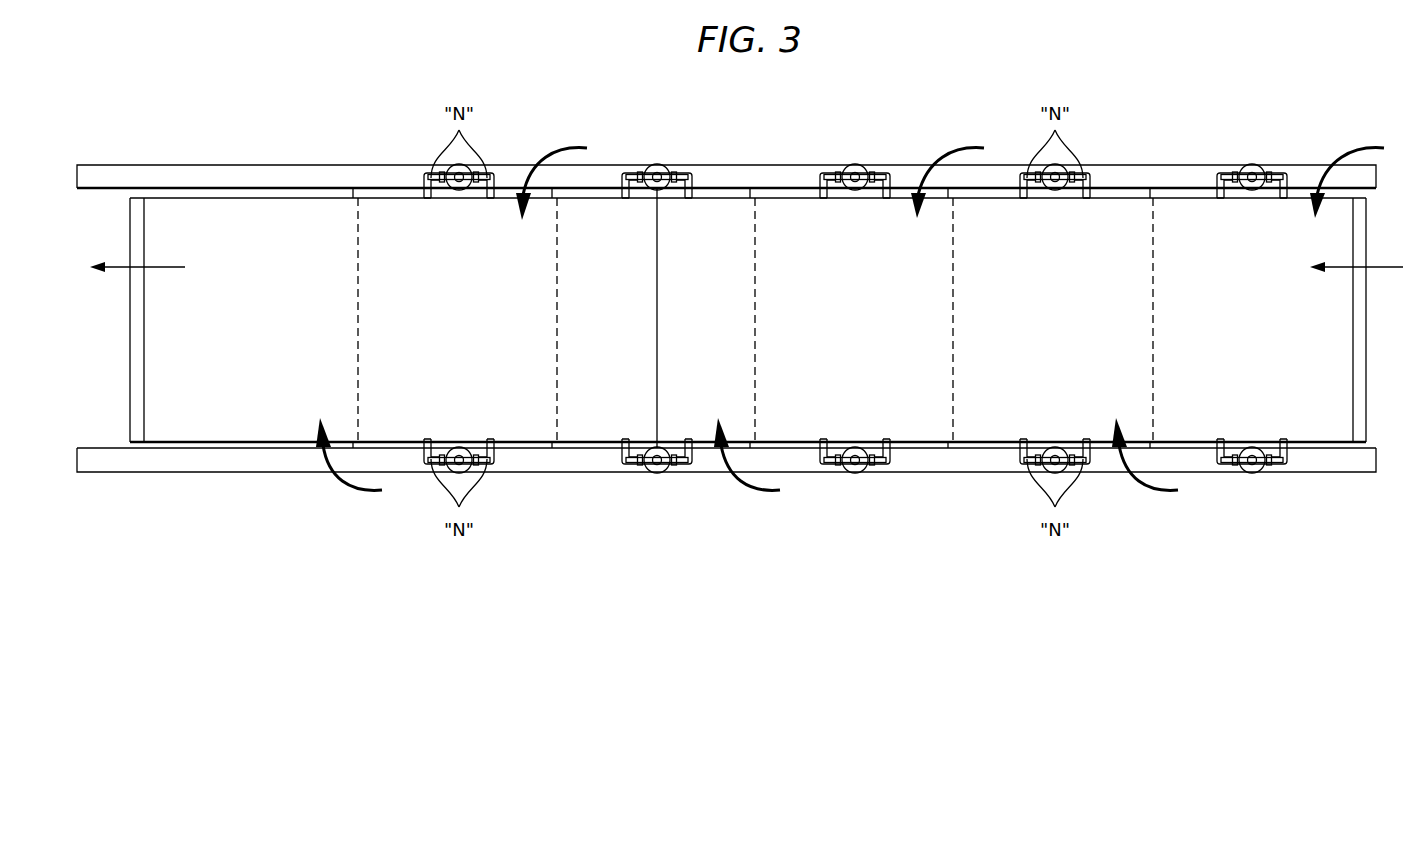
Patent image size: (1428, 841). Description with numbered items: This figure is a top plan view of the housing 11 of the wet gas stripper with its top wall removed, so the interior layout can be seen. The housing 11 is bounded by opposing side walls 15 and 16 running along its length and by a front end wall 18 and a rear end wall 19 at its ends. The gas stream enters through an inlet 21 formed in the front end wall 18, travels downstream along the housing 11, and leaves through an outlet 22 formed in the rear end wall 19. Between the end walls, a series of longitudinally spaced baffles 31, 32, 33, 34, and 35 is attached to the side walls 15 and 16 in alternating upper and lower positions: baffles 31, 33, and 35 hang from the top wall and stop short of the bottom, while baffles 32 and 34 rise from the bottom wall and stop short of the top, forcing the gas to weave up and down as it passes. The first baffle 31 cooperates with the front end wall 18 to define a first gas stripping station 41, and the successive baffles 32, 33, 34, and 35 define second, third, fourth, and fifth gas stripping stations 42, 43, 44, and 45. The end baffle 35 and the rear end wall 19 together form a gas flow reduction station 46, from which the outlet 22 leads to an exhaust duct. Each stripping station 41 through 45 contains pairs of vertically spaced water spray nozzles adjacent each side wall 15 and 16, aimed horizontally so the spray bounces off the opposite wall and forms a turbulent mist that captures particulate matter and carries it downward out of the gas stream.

The housing 11 is at (158, 100).
The side wall 15 is at (505, 165).
The side wall 16 is at (700, 472).
The front end wall 18 is at (1366, 410).
The rear end wall 19 is at (130, 382).
The inlet 21 is at (1388, 262).
The outlet 22 is at (170, 262).
The first baffle 31 is at (1155, 241).
The second baffle 32 is at (955, 388).
The third baffle 33 is at (757, 241).
The fourth baffle 34 is at (559, 388).
The fifth baffle 35 is at (360, 241).
The first gas stripping station 41 is at (1358, 176).
The second gas stripping station 42 is at (1158, 462).
The third gas stripping station 43 is at (959, 176).
The fourth gas stripping station 44 is at (760, 462).
The fifth gas stripping station 45 is at (563, 177).
The gas flow reduction station 46 is at (362, 462).